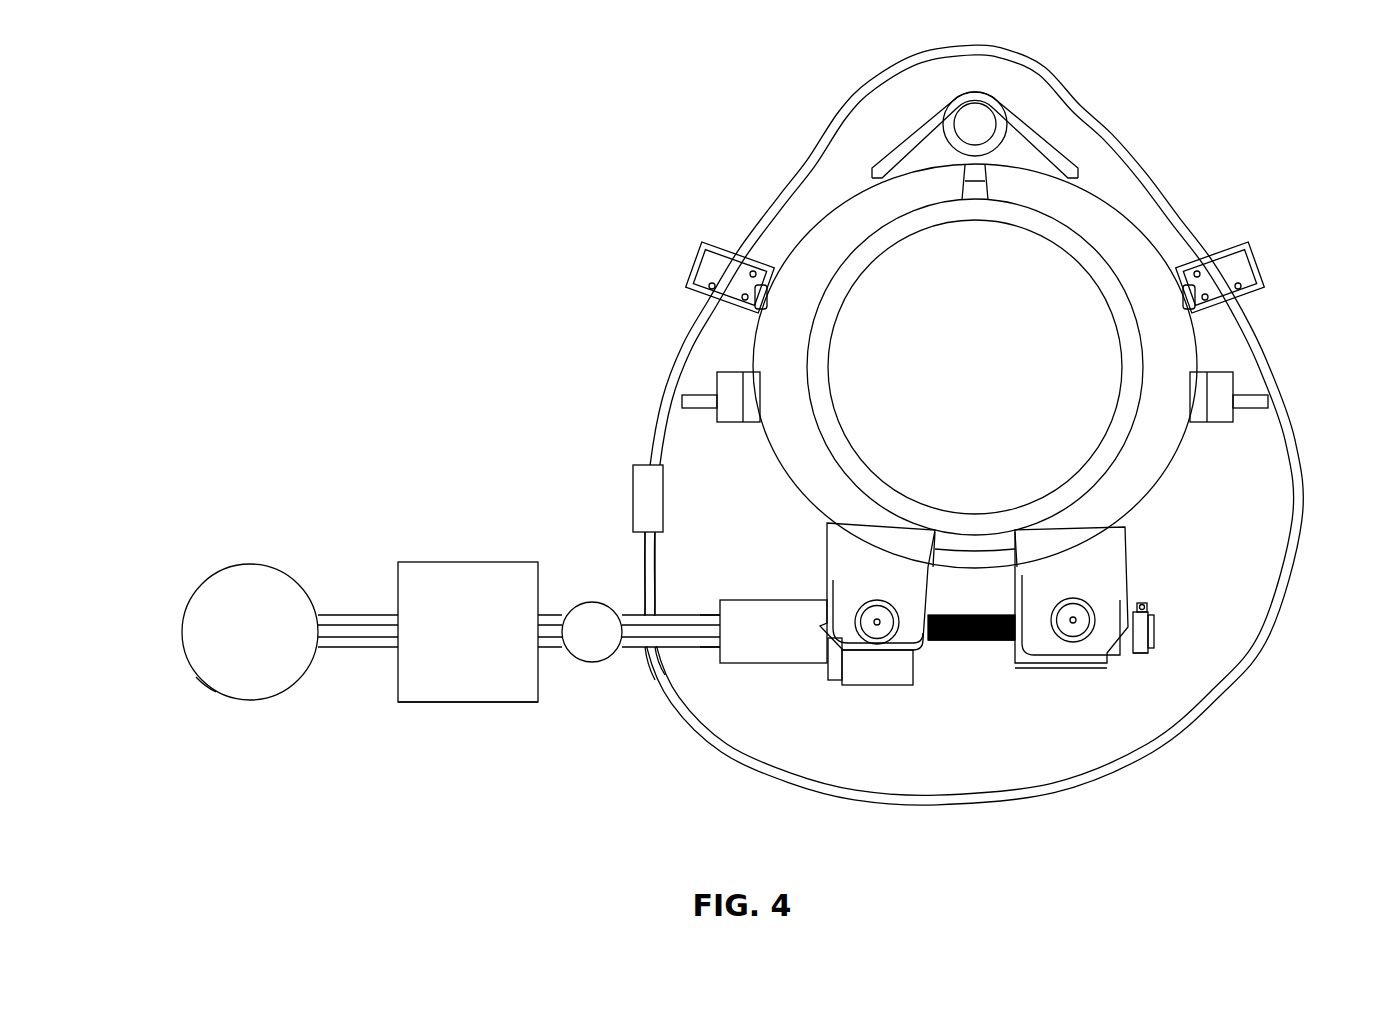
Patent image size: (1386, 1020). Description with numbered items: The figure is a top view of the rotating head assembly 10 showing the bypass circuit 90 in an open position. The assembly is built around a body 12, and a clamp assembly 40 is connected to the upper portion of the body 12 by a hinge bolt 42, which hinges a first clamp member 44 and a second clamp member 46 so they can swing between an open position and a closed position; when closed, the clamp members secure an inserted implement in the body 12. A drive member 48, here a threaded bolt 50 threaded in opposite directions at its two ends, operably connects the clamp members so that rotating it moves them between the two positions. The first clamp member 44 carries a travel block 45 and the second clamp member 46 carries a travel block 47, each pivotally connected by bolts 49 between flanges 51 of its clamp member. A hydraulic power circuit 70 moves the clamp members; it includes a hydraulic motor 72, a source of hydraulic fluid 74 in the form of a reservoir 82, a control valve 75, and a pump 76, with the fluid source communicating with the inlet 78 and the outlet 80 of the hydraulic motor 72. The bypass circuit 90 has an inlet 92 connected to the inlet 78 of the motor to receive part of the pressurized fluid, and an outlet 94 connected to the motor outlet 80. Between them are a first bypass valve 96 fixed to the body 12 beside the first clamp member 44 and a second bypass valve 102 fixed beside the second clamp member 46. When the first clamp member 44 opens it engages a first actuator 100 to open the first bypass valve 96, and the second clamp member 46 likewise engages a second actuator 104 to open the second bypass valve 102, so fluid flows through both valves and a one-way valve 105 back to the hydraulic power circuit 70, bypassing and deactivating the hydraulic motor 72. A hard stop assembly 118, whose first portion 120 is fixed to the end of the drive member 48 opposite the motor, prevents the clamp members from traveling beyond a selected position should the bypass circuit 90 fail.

The rotating head assembly 10 is at (737, 57).
The body 12 is at (1142, 657).
The clamp assembly 40 is at (1040, 138).
The hinge bolt 42 is at (1000, 110).
The first clamp member 44 is at (1122, 203).
The travel block 45 is at (1110, 668).
The second clamp member 46 is at (818, 208).
The travel block 47 is at (838, 682).
The drive member 48 is at (957, 642).
The bolts 49 is at (878, 626).
The threaded bolt 50 is at (987, 642).
The flanges 51 is at (827, 560).
The hydraulic power circuit 70 is at (470, 556).
The hydraulic motor 72 is at (810, 666).
The source of hydraulic fluid 74 is at (250, 700).
The control valve 75 is at (590, 601).
The pump 76 is at (465, 703).
The inlet 78 is at (716, 664).
The outlet 80 is at (721, 600).
The reservoir 82 is at (208, 676).
The bypass circuit 90 is at (957, 814).
The inlet 92 is at (645, 652).
The outlet 94 is at (656, 605).
The first bypass valve 96 is at (1262, 268).
The first actuator 100 is at (1197, 306).
The second bypass valve 102 is at (700, 268).
The second actuator 104 is at (738, 303).
The one-way valve 105 is at (633, 490).
The hard stop assembly 118 is at (1150, 650).
The first portion 120 is at (1143, 600).